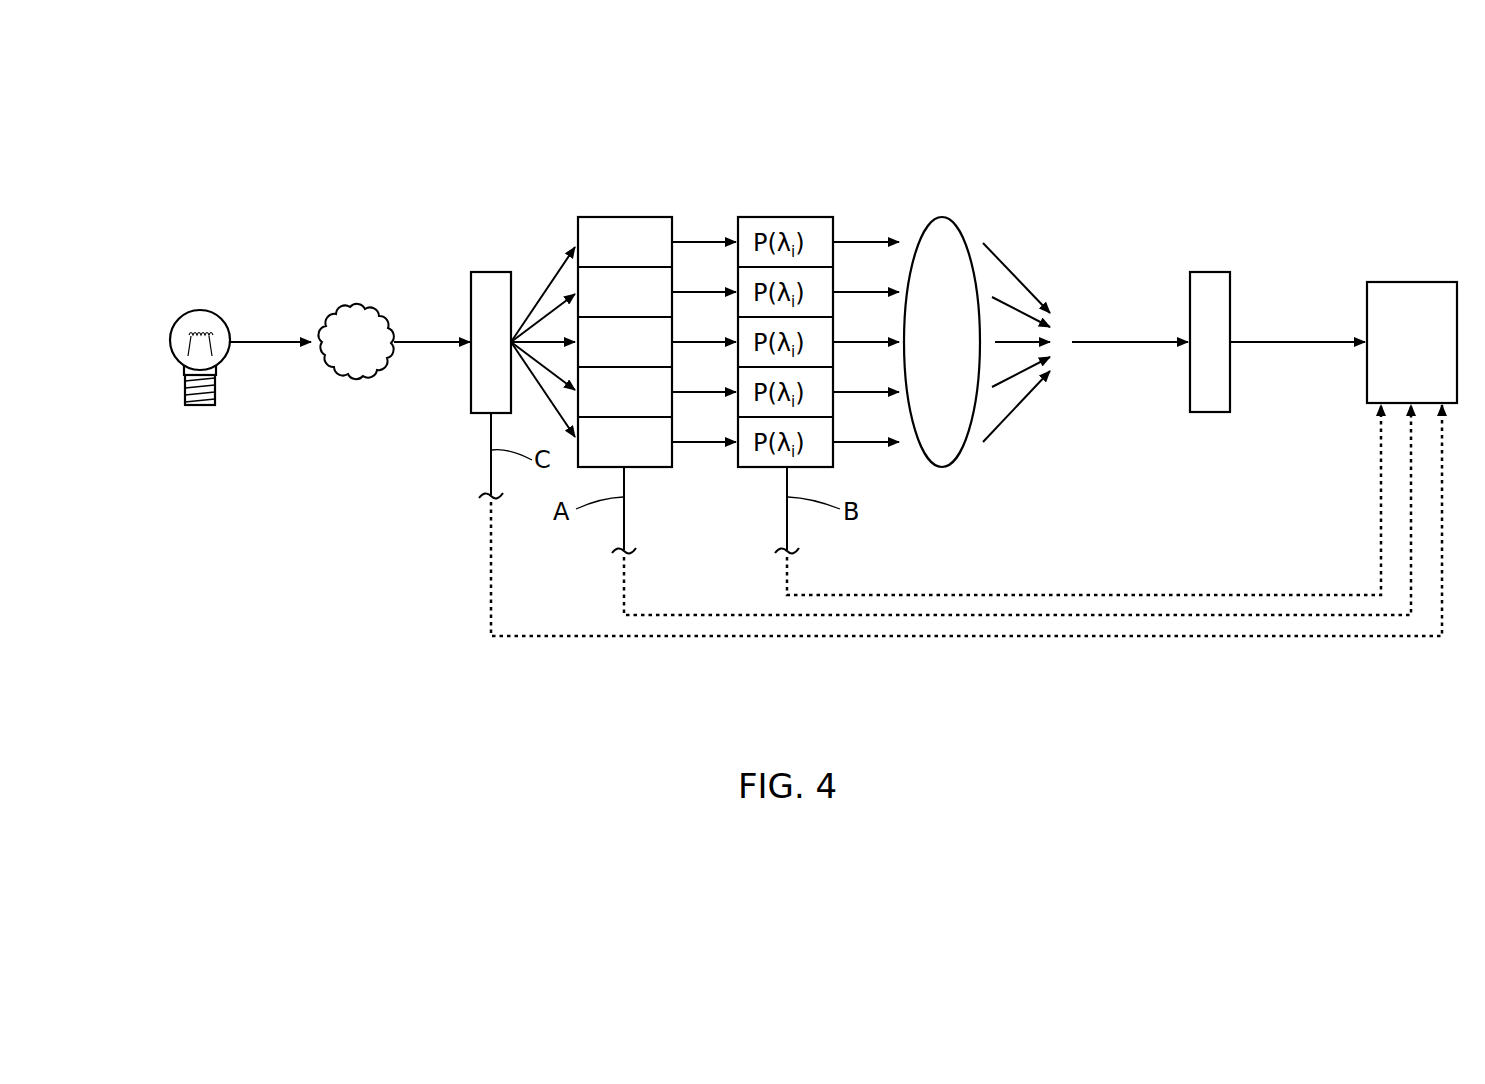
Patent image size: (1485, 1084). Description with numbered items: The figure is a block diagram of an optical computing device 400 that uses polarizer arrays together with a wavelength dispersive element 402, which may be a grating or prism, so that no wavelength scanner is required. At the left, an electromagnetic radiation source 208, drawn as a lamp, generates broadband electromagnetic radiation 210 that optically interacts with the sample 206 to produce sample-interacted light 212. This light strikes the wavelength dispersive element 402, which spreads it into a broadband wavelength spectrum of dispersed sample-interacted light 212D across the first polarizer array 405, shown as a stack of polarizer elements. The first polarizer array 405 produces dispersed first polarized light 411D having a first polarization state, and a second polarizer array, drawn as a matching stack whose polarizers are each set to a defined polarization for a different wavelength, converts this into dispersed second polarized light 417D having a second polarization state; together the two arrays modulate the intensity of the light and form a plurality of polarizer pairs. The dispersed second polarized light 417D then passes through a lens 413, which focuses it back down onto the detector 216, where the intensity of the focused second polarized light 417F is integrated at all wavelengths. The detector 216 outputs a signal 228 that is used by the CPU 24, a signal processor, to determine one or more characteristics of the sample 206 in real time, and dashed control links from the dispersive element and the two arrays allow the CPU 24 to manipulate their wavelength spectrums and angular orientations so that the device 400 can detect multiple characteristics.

The optical computing device 400 is at (352, 130).
The electromagnetic radiation source 208 is at (180, 315).
The broadband electromagnetic radiation 210 is at (278, 340).
The sample 206 is at (355, 341).
The sample-interacted light 212 is at (430, 340).
The wavelength dispersive element 402 is at (490, 271).
The dispersed sample-interacted light 212D is at (548, 273).
The first polarizer array 405 is at (623, 216).
The dispersed first polarized light 411D is at (705, 445).
The dispersed second polarized light 417D is at (865, 240).
The lens 413 is at (942, 216).
The focused second polarized light 417F is at (1112, 340).
The detector 216 is at (1210, 271).
The detector signal 228 is at (1262, 340).
The CPU 24 is at (1412, 342).